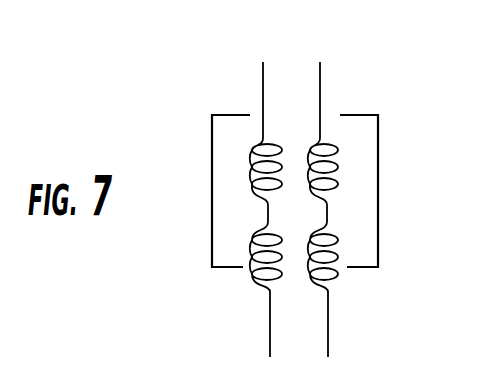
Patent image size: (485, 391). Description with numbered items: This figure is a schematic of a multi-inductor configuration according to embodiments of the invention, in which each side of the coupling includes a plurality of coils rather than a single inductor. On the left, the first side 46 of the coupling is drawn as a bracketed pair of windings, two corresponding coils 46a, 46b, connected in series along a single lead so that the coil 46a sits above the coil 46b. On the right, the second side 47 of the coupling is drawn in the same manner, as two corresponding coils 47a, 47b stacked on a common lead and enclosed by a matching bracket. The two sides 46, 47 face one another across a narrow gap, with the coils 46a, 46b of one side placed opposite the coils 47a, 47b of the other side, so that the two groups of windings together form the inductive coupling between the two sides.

The first side of the coupling 46 is at (192, 148).
The coil 46a is at (256, 148).
The coil 46b is at (250, 266).
The second side of the coupling 47 is at (382, 138).
The coil 47a is at (340, 150).
The coil 47b is at (335, 278).